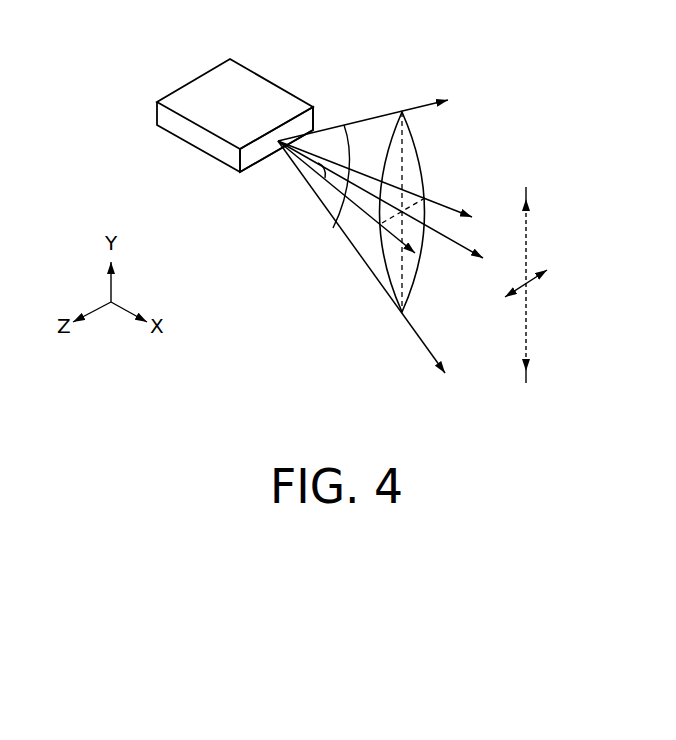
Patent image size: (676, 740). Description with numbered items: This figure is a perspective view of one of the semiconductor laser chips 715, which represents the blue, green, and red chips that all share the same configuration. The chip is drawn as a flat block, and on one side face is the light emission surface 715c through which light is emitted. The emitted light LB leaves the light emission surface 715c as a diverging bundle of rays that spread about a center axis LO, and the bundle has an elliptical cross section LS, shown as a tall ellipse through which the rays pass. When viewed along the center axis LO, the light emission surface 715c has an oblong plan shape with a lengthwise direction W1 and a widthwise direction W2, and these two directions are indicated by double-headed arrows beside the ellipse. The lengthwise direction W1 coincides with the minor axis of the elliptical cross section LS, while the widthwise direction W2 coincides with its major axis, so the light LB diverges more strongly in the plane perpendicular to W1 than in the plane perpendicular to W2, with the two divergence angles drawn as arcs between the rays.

The semiconductor laser chip 715 is at (252, 88).
The light emission surface 715c is at (250, 156).
The emitted light LB is at (391, 111).
The elliptical cross section LS is at (423, 138).
The center axis of emitted light LO is at (455, 248).
The lengthwise direction W1 is at (540, 278).
The widthwise direction W2 is at (526, 270).